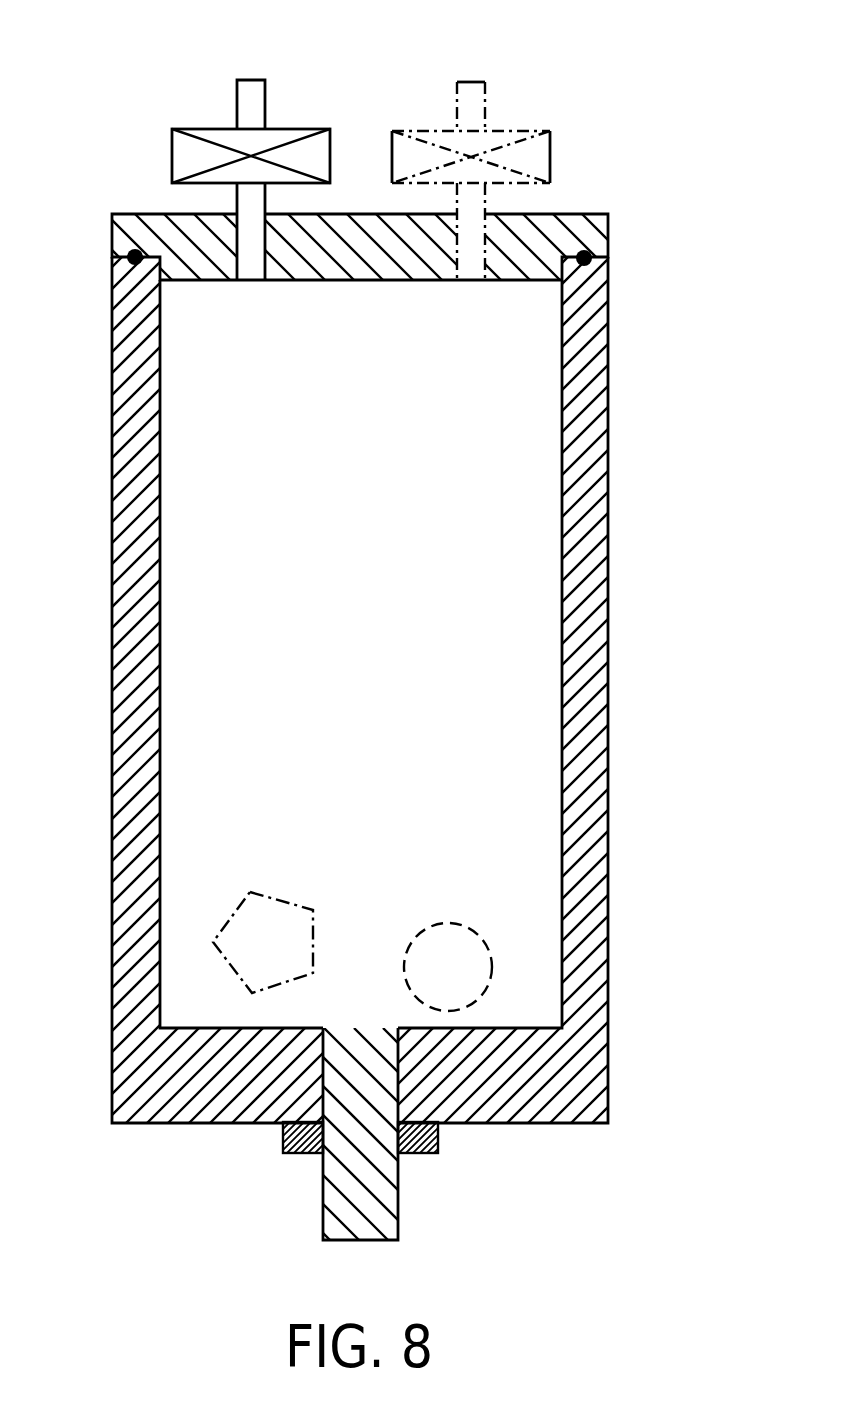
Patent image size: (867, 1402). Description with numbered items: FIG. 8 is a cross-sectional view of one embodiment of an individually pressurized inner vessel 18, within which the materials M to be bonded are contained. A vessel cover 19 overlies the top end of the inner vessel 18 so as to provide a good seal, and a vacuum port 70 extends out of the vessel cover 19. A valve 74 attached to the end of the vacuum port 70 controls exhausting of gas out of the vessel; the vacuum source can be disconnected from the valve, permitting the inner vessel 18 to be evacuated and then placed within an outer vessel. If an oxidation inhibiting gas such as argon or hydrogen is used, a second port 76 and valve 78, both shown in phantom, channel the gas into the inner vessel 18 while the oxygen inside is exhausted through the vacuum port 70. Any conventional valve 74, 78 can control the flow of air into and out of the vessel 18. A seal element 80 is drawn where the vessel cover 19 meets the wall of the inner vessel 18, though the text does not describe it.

The inner vessel 18 is at (608, 660).
The vessel cover 19 is at (588, 233).
The vacuum port 70 is at (237, 200).
The valve 74 is at (190, 157).
The second port 76 is at (473, 200).
The valve 78 is at (500, 135).
The O-ring seal 80 is at (585, 259).
The materials M is at (280, 920).